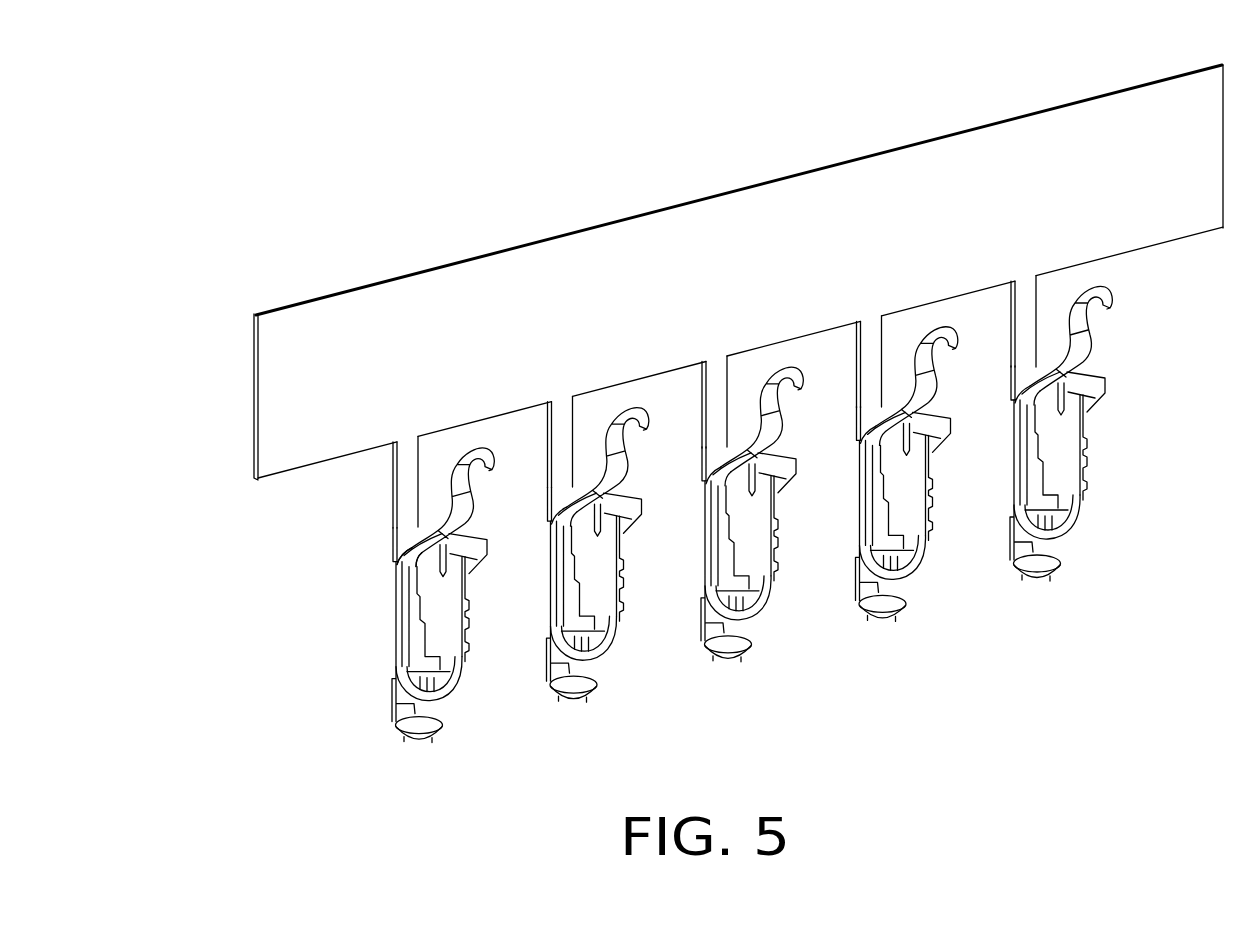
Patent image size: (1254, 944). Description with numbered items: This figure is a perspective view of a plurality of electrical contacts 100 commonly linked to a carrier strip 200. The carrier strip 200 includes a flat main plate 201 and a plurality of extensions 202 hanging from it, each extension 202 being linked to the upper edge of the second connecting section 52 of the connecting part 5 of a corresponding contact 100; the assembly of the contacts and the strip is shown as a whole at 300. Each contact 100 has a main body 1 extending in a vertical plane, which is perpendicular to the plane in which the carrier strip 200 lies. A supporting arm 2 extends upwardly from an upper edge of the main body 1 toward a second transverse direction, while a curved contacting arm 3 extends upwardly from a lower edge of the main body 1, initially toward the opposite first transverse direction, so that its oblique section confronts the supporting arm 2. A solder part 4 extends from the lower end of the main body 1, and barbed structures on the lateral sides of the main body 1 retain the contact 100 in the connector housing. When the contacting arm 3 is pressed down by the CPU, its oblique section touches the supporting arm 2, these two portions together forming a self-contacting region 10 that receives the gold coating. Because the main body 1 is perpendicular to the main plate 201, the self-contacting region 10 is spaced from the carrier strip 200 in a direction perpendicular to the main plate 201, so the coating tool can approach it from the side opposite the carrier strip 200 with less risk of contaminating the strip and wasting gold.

The main body 1 is at (438, 624).
The supporting arm 2 is at (453, 512).
The contacting arm 3 is at (429, 631).
The solder part 4 is at (417, 705).
The connecting part 5 is at (417, 547).
The second connecting section 52 is at (409, 557).
The self-contacting region 10 is at (406, 470).
The electrical contact 100 is at (1063, 433).
The carrier strip 200 is at (697, 261).
The main plate 201 is at (295, 373).
The extensions 202 is at (405, 473).
The contact assembly with carrier strip 300 is at (668, 285).